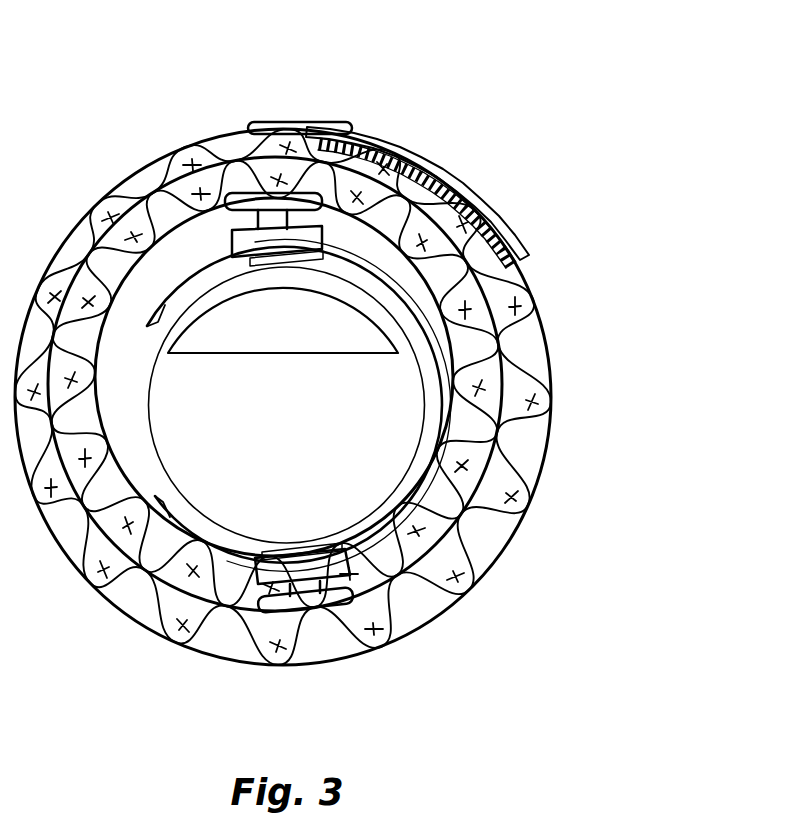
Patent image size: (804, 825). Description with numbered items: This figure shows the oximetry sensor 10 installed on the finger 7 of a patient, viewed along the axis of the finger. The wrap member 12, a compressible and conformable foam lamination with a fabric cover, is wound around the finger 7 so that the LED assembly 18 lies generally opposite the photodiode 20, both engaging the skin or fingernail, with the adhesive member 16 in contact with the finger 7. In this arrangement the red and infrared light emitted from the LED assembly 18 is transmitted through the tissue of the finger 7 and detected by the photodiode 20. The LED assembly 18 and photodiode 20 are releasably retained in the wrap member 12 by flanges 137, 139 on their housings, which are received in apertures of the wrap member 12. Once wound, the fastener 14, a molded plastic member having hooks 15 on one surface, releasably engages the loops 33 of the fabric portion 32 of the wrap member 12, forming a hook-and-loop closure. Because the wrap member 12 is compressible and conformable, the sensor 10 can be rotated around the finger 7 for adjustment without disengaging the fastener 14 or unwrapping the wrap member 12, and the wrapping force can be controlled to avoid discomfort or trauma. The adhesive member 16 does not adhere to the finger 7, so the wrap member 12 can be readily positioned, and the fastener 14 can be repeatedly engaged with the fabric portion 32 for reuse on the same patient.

The oximetry sensor 10 is at (568, 158).
The wrap member 12 is at (528, 400).
The fastener 14 is at (412, 147).
The hooks 15 is at (350, 133).
The adhesive member 16 is at (450, 455).
The LED assembly 18 is at (322, 563).
The photodiode 20 is at (228, 222).
The fabric portion 32 is at (543, 330).
The loops 33 is at (505, 268).
The flange 137 is at (285, 192).
The flange 139 is at (277, 608).
The finger 7 is at (295, 432).